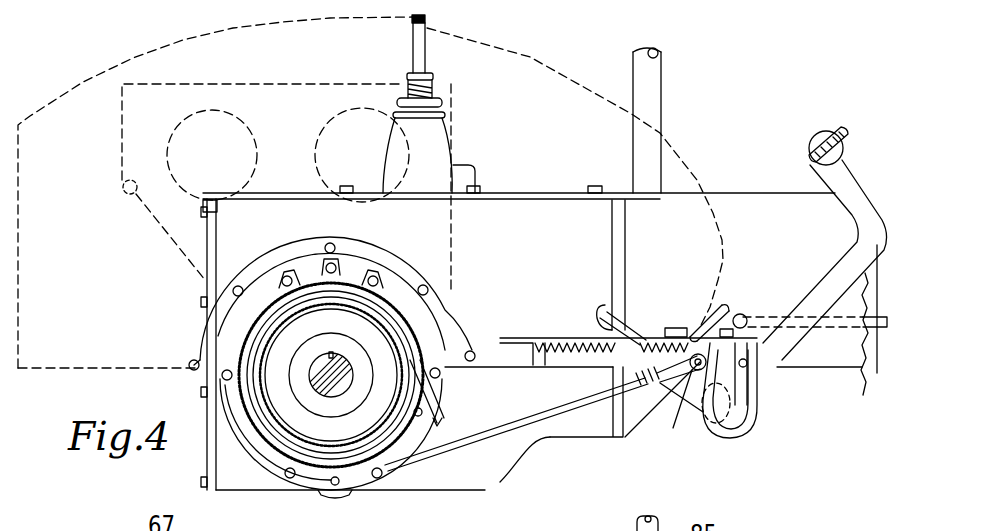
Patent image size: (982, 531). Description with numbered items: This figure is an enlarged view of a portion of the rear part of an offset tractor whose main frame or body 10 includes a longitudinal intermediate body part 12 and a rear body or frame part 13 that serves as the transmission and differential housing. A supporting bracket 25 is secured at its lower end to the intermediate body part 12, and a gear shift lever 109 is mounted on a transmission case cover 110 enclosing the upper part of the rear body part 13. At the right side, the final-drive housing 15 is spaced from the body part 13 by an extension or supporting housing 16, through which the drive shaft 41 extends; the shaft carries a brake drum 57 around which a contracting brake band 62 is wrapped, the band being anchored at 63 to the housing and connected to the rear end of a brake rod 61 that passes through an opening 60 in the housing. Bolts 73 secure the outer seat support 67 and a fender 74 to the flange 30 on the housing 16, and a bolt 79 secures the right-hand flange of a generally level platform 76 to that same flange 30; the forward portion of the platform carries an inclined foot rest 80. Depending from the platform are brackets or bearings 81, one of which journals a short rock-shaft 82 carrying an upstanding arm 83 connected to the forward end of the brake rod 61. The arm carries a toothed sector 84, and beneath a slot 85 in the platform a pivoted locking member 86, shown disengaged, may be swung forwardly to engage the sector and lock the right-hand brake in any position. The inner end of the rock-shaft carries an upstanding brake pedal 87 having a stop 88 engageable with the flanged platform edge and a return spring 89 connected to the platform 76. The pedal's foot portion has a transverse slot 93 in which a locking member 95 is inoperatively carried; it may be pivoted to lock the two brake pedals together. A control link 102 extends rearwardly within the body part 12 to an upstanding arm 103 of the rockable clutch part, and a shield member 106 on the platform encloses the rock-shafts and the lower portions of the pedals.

The longitudinal main frame or body 10 is at (818, 370).
The longitudinal intermediate body part 12 is at (750, 193).
The rear body or frame part 13 is at (485, 478).
The right-hand final-drive housing unit 15 is at (408, 326).
The extension or supporting housing 16 is at (218, 332).
The supporting bracket 25 is at (663, 56).
The flange 30 is at (273, 257).
The drive shaft 41 is at (345, 383).
The brake drum 57 is at (273, 410).
The opening 60 is at (420, 437).
The brake rod 61 is at (549, 437).
The contracting brake band 62 is at (283, 400).
The anchor 63 is at (438, 408).
The seat support 67 is at (120, 128).
The bolts 73 is at (337, 242).
The fender 74 is at (75, 90).
The platform 76 is at (523, 347).
The bolt 79 is at (500, 330).
The foot rest 80 is at (700, 328).
The bracket or bearing 81 is at (757, 414).
The short rock-shaft 82 is at (700, 434).
The upstanding arm 83 is at (697, 393).
The sector 84 is at (692, 333).
The slot 85 is at (643, 340).
The pivoted locking member 86 is at (597, 310).
The brake pedal 87 is at (857, 186).
The stop 88 is at (790, 302).
The return spring 89 is at (590, 346).
The transverse slot 93 is at (813, 144).
The locking member 95 is at (845, 131).
The control element or link 102 is at (862, 375).
The upstanding arm 103 is at (745, 308).
The shield member 106 is at (727, 440).
The gear shift lever 109 is at (426, 25).
The transmission case cover 110 is at (512, 192).